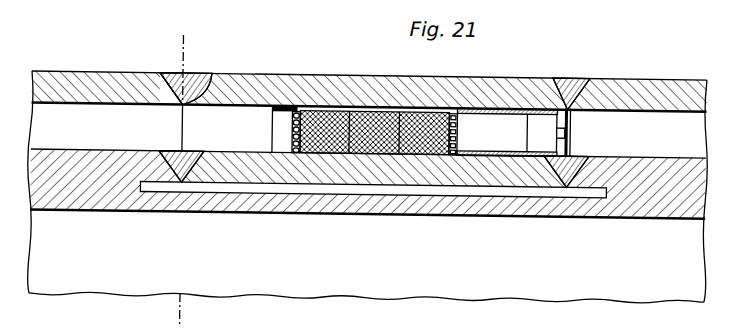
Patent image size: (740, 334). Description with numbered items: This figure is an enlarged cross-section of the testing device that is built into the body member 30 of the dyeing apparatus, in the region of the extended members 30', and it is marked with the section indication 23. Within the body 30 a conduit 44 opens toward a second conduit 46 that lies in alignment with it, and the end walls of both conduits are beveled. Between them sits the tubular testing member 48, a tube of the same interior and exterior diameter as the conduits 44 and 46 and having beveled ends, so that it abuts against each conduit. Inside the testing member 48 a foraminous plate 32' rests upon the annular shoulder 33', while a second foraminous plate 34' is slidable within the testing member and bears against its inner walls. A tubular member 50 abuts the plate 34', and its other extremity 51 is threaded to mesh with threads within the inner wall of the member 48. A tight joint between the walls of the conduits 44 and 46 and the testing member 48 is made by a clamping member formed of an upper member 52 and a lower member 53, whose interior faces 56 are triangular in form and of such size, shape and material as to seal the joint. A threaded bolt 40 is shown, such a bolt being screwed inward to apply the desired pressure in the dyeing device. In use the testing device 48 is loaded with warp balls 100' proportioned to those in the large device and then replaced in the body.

The section line 23 is at (197, 40).
The body member 30 is at (367, 187).
The extended member 30' is at (370, 62).
The foraminous plate 32' is at (303, 97).
The annular shoulder 33' is at (249, 128).
The second foraminous plate 34' is at (470, 102).
The threaded bolt 40 is at (575, 190).
The conduit 44 is at (78, 111).
The second conduit 46 is at (620, 112).
The tubular testing member 48 is at (262, 72).
The tubular member 50 is at (497, 103).
The threaded extremity 51 is at (540, 101).
The upper member 52 is at (200, 72).
The lower member 53 is at (182, 180).
The interior face 56 is at (198, 75).
The warp balls 100' is at (375, 100).